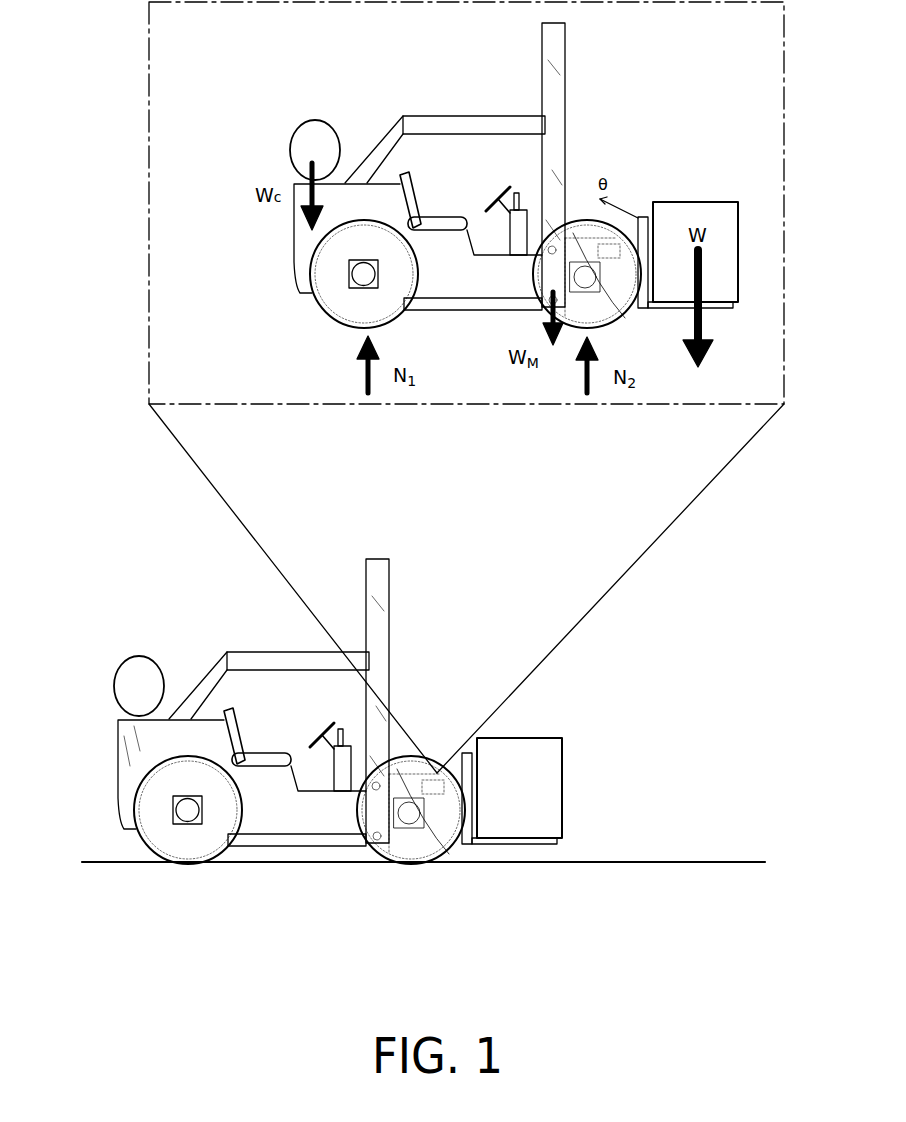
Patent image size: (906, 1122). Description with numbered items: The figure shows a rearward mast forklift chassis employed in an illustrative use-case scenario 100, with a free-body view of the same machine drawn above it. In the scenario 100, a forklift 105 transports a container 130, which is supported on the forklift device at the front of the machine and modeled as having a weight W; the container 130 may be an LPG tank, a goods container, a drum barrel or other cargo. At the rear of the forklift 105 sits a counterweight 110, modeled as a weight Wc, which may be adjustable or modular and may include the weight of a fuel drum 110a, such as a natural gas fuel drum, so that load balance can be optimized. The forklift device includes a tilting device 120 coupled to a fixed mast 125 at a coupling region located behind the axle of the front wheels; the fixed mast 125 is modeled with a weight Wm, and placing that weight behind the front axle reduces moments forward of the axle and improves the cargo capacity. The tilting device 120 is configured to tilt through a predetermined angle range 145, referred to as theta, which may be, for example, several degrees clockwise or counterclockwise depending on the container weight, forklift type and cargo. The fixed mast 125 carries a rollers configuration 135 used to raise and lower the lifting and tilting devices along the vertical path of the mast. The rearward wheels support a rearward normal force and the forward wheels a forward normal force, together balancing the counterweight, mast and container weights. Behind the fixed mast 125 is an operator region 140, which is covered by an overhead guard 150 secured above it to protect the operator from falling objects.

The use-case scenario 100 is at (185, 565).
The forklift 105 is at (188, 744).
The counterweight 110 is at (129, 767).
The fuel drum 110a is at (130, 660).
The tilting device 120 is at (573, 233).
The fixed mast 125 is at (343, 688).
The container 130 is at (572, 788).
The rollers configuration 135 is at (552, 190).
The operator region 140 is at (417, 204).
The predetermined angle range 145 is at (613, 181).
The overhead guard 150 is at (405, 117).